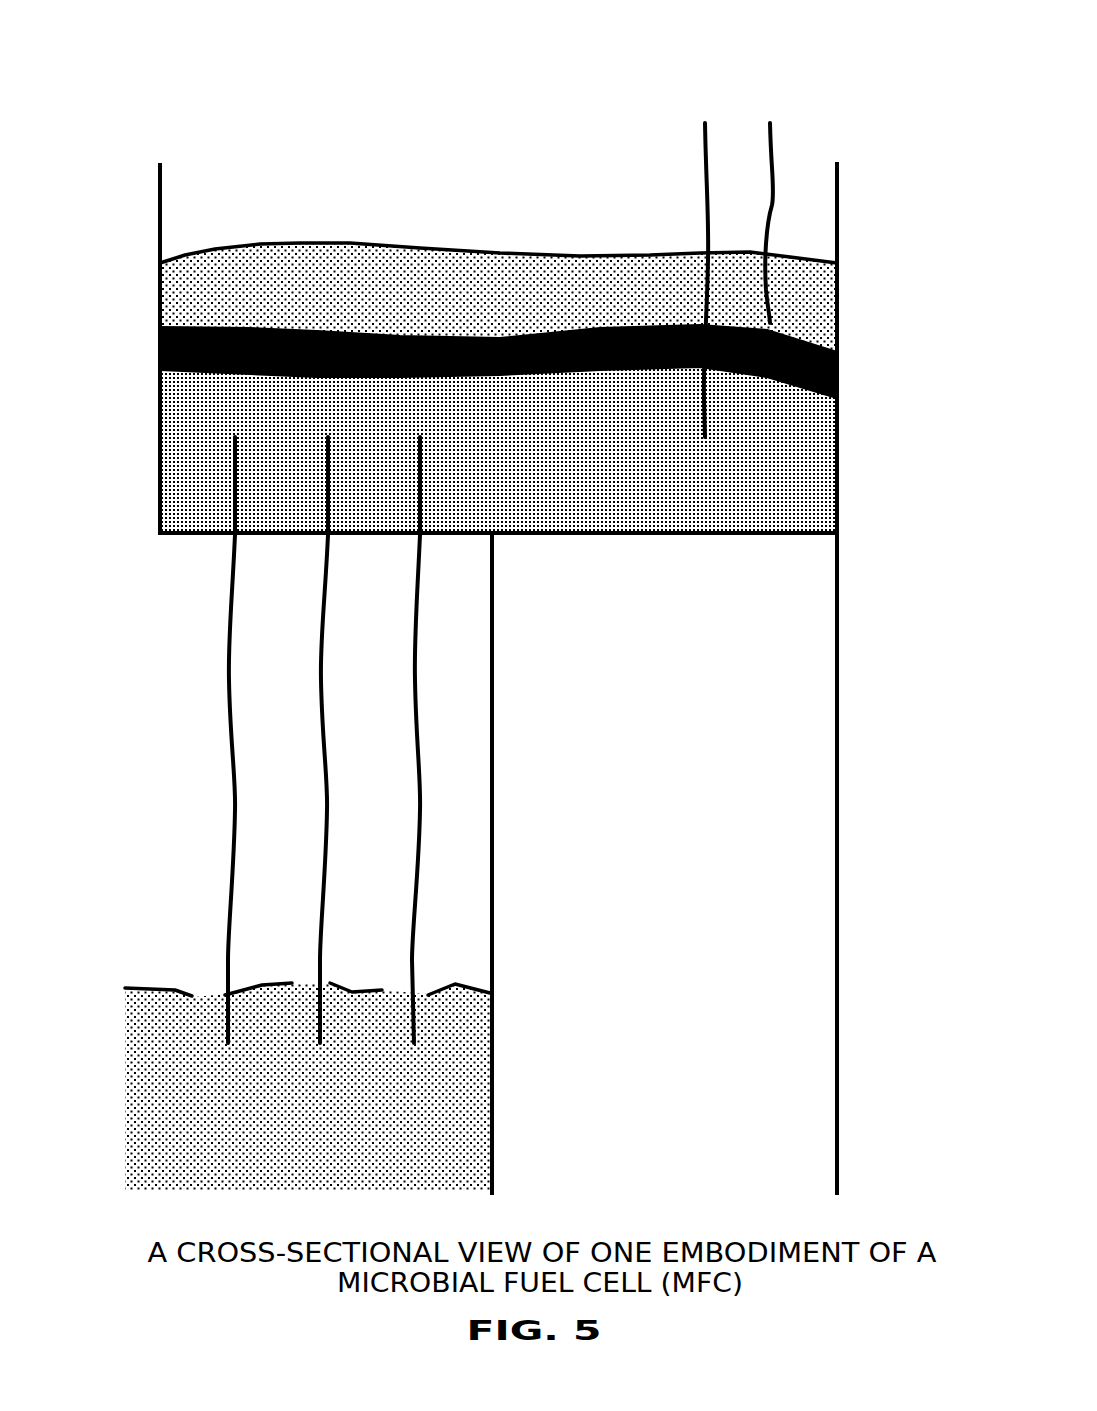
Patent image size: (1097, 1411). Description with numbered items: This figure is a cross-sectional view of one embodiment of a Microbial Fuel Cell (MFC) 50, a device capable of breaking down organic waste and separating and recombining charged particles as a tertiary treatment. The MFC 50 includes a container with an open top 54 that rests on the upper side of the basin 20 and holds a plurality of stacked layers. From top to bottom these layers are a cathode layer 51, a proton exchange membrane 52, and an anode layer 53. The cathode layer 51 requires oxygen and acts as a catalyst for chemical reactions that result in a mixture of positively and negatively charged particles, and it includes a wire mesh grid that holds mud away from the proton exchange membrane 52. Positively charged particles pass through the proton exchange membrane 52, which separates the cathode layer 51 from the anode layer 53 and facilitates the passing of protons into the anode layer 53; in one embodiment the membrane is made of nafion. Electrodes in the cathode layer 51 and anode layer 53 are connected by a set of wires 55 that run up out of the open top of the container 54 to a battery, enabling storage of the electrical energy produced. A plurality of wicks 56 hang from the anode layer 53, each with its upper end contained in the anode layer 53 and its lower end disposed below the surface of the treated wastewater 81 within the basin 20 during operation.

The microbial fuel cell (MFC) 50 is at (164, 97).
The cathode layer 51 is at (490, 311).
The proton exchange membrane 52 is at (498, 361).
The anode layer 53 is at (490, 485).
The container with an open top 54 is at (838, 212).
The set of wires 55 is at (758, 108).
The plurality of wicks 56 is at (214, 832).
The basin 20 is at (651, 898).
The treated wastewater 81 is at (297, 1140).